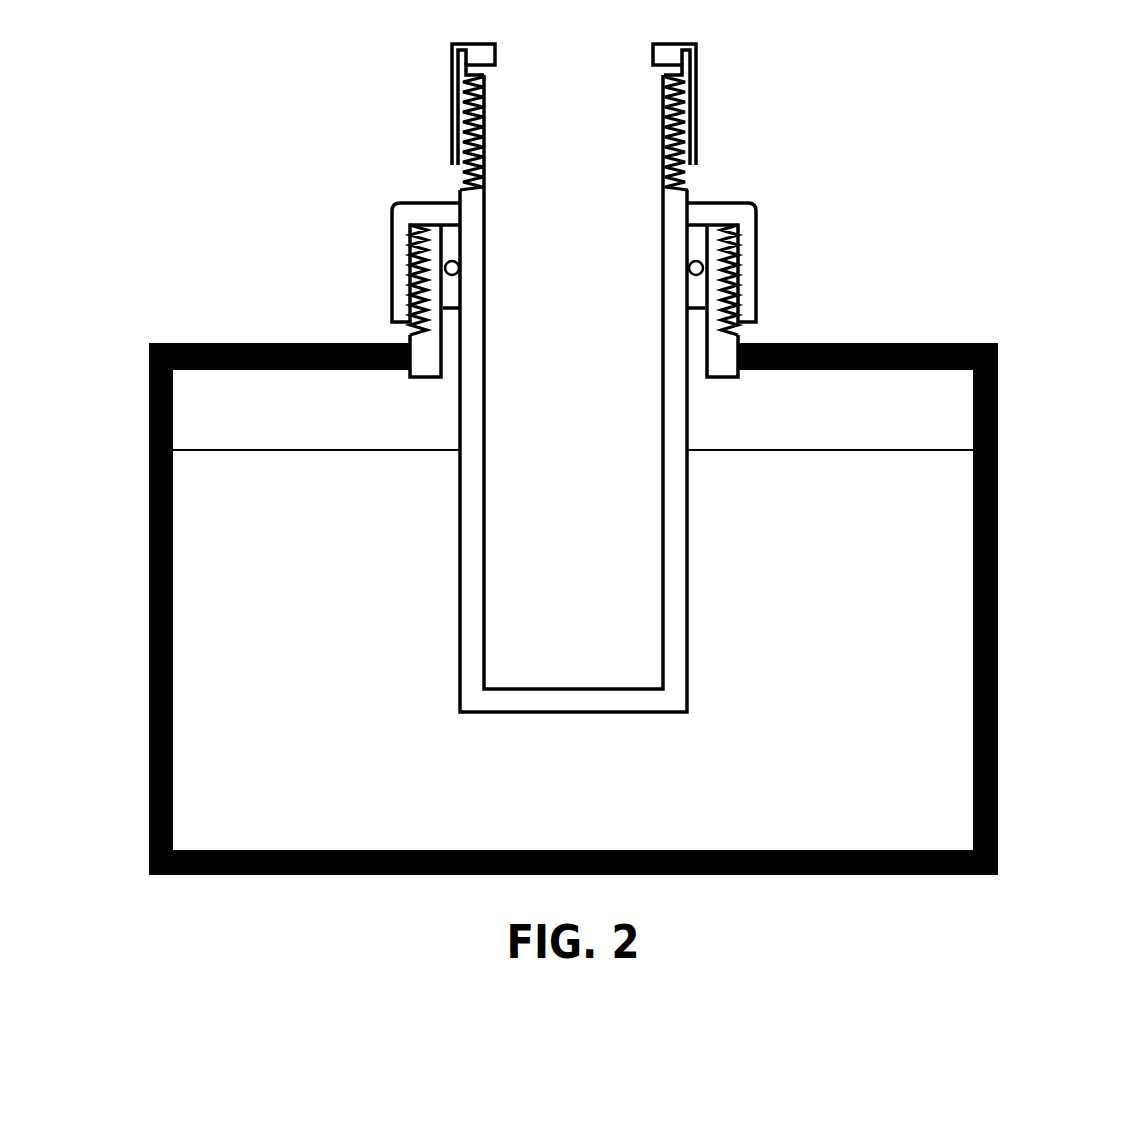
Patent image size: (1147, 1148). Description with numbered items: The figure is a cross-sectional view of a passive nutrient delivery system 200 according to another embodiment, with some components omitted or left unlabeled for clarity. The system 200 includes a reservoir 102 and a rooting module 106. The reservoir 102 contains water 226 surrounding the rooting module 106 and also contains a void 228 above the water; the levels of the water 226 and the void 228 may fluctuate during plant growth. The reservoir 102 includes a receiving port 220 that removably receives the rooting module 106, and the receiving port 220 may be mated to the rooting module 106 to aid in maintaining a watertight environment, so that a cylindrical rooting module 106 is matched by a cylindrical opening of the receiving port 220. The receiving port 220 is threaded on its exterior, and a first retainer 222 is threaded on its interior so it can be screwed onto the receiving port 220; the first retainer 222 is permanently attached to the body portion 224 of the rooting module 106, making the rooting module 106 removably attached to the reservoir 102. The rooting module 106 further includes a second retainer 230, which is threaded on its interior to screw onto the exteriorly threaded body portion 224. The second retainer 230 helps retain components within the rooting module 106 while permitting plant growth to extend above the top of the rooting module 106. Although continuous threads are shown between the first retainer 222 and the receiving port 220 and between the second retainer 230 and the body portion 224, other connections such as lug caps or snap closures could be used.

The reservoir 102 is at (997, 763).
The rooting module 106 is at (743, 169).
The passive nutrient delivery system 200 is at (967, 207).
The receiving port 220 is at (423, 378).
The first retainer 222 is at (392, 245).
The body portion 224 is at (687, 602).
The water 226 is at (913, 773).
The void 228 is at (913, 423).
The second retainer 230 is at (450, 92).